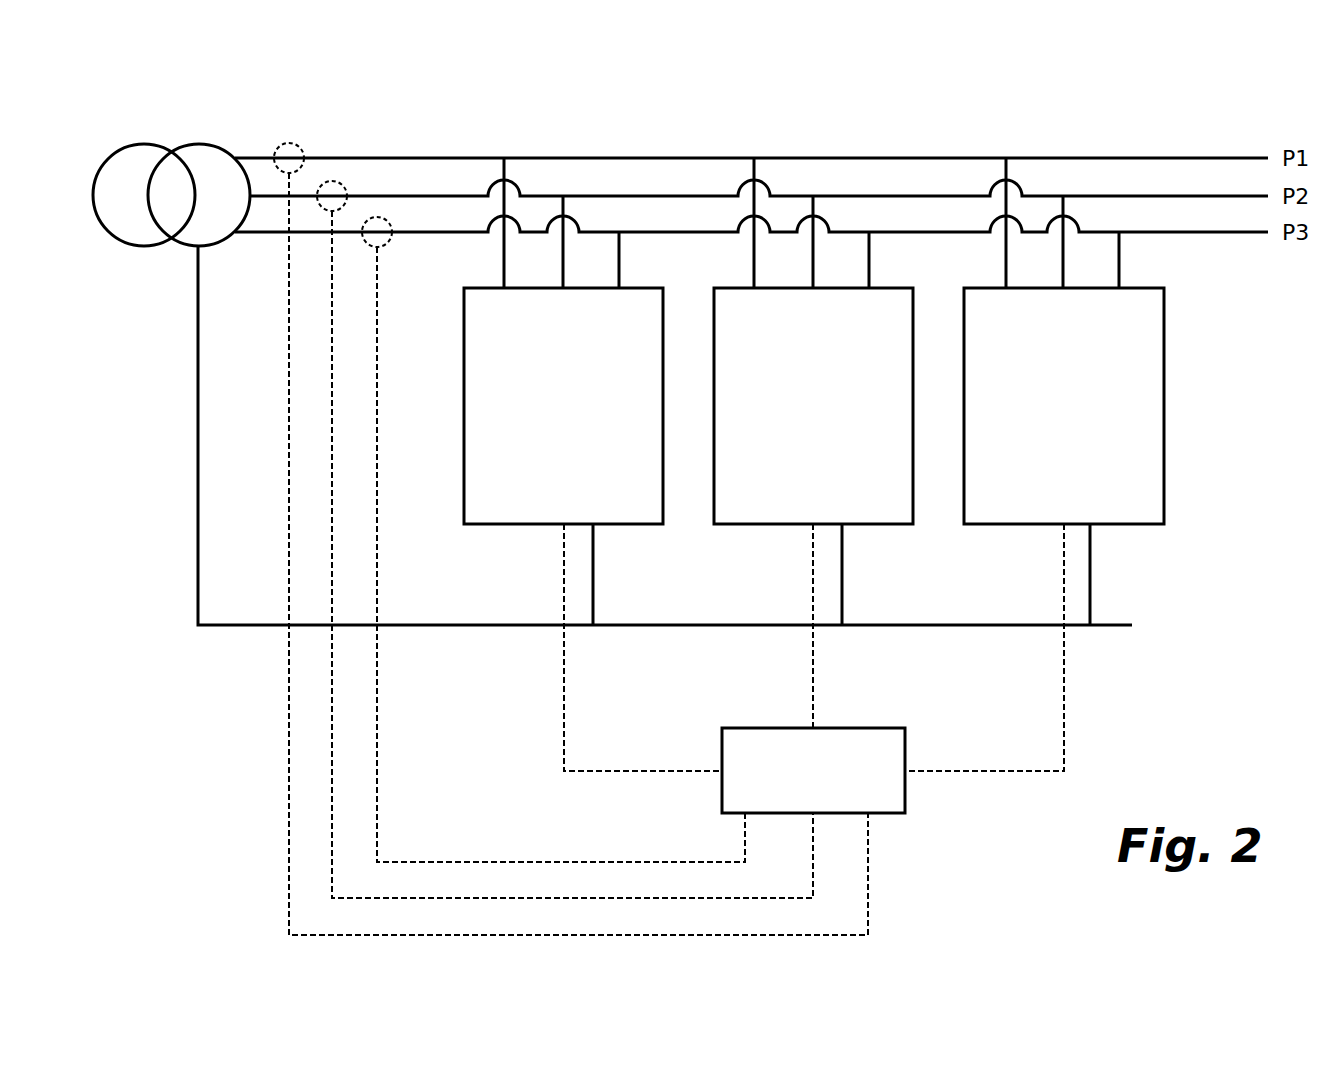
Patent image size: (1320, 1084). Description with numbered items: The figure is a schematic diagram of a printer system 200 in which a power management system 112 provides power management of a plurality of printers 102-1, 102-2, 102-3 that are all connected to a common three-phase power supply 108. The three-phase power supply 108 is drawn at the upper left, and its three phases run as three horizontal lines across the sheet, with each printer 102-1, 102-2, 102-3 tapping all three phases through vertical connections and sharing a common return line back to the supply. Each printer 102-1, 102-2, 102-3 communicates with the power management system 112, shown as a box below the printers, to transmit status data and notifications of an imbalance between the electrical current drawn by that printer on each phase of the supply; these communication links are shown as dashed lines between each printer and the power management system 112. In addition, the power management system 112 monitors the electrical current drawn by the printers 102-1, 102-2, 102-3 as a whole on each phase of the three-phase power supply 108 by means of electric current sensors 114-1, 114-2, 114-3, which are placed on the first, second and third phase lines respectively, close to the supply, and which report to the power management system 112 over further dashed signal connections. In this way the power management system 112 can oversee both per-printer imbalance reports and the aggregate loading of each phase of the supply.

The printer system 200 is at (222, 704).
The three-phase power supply 108 is at (173, 153).
The electric current sensor 114-1 is at (296, 148).
The electric current sensor 114-2 is at (341, 186).
The electric current sensor 114-3 is at (385, 222).
The printer 102-1 is at (593, 464).
The printer 102-2 is at (813, 443).
The printer 102-3 is at (1034, 464).
The power management system 112 is at (813, 770).